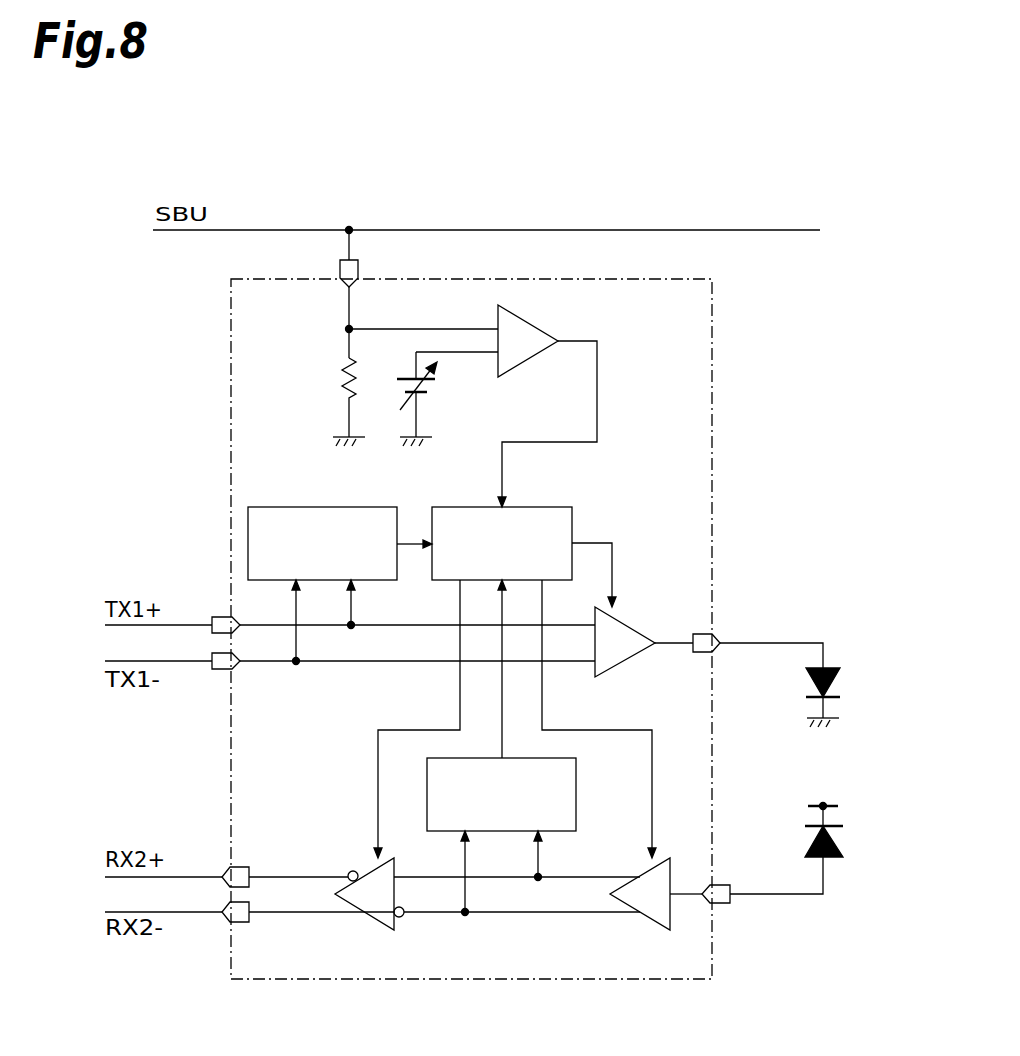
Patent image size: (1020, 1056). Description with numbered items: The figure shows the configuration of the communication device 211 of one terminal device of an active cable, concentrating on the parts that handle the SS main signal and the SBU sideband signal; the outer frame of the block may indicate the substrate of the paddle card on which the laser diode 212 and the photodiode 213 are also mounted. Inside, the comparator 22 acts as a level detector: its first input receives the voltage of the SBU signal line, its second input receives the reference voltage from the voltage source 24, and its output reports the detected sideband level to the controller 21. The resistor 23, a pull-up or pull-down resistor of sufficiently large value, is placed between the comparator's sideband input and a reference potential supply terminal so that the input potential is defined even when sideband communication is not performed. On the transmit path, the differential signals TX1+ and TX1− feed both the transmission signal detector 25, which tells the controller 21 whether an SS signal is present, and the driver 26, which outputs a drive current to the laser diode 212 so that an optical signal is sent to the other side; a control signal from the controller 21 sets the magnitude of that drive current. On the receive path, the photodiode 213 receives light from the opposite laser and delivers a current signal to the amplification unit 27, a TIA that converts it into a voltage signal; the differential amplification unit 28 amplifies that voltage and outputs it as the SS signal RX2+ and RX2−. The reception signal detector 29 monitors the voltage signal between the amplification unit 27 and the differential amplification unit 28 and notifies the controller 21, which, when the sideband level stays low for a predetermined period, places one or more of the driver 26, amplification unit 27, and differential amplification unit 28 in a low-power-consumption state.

The controller 21 is at (532, 507).
The comparator 22 is at (527, 320).
The resistor 23 is at (342, 376).
The voltage source 24 is at (437, 385).
The transmission signal detector 25 is at (337, 507).
The driver 26 is at (614, 672).
The amplification unit 27 is at (655, 922).
The differential amplification unit 28 is at (378, 922).
The reception signal detector 29 is at (576, 790).
The communication device 211 is at (713, 413).
The laser diode 212 is at (832, 668).
The photodiode 213 is at (834, 856).